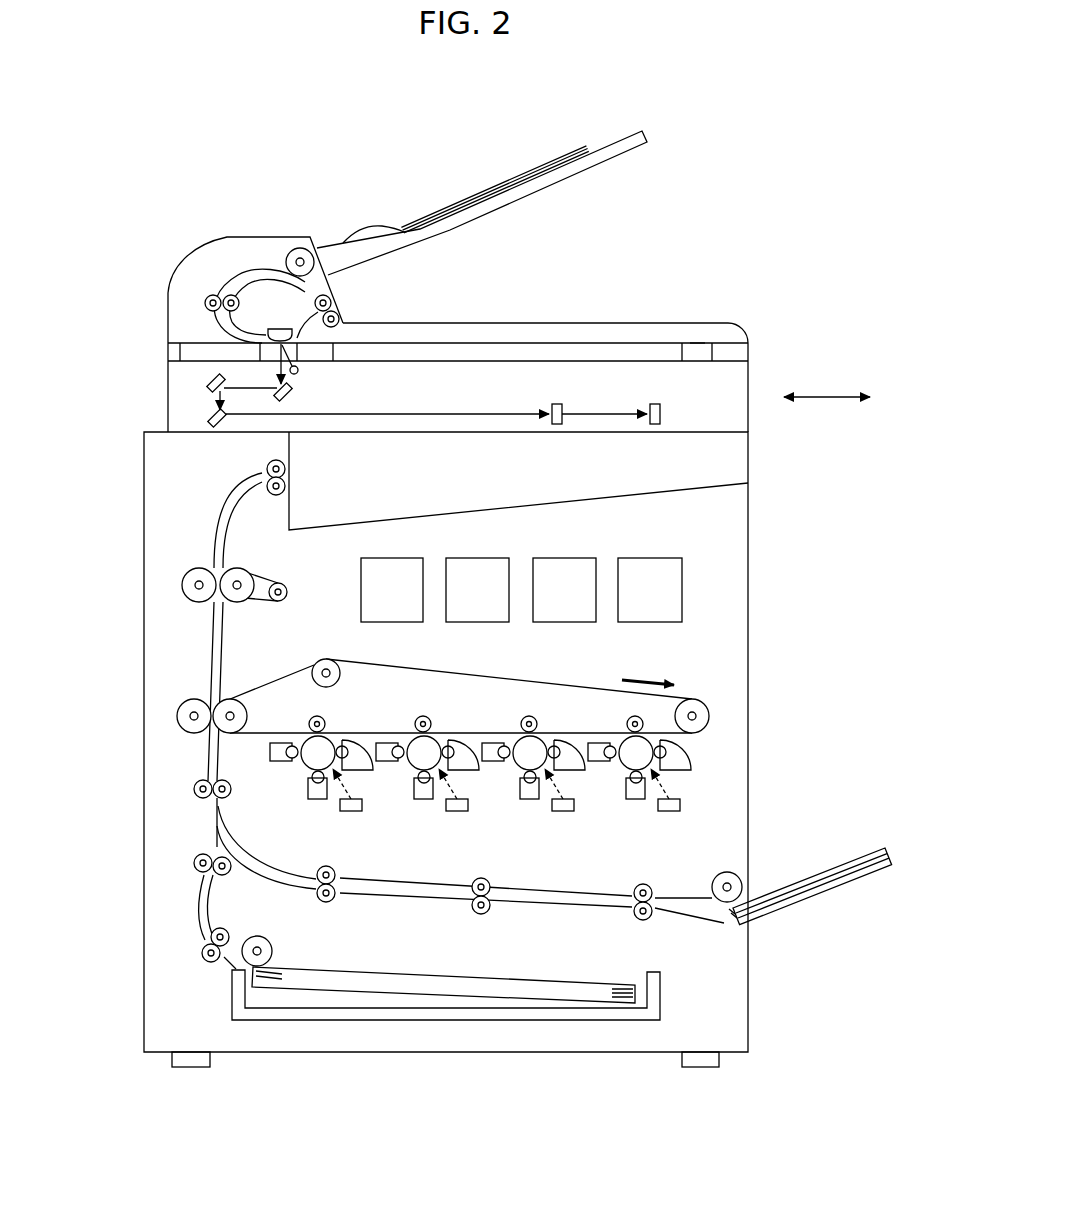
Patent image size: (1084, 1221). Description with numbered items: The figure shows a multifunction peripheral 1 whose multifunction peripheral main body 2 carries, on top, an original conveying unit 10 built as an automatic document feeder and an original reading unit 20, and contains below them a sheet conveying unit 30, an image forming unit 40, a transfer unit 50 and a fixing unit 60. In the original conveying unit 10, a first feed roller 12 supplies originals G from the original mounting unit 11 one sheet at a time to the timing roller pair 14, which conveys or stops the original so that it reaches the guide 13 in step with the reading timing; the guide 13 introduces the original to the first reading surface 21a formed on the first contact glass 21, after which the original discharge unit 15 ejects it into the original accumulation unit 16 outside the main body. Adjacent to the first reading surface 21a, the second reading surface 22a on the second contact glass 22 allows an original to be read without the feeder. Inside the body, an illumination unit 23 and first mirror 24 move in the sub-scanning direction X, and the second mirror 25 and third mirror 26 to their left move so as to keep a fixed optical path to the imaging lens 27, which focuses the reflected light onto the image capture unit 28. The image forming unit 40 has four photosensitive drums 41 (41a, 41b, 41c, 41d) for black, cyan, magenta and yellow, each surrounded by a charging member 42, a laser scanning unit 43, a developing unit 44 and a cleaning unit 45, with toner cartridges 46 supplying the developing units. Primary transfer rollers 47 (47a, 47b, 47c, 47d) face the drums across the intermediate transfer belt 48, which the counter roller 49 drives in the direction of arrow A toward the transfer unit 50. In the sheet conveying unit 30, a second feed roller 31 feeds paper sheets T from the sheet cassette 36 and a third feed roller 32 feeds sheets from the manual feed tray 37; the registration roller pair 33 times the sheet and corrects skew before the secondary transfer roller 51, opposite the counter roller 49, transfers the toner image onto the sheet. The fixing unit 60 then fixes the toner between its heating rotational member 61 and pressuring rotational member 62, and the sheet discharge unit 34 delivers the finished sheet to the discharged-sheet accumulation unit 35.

The multifunction peripheral 1 is at (730, 128).
The multifunction peripheral main body 2 is at (752, 519).
The original conveying unit 10 is at (322, 220).
The original mounting unit 11 is at (620, 138).
The first feed roller 12 is at (300, 247).
The guide 13 is at (281, 327).
The timing roller pair 14 is at (208, 296).
The original discharge unit 15 is at (348, 300).
The original accumulation unit 16 is at (410, 321).
The original reading unit 20 is at (718, 381).
The first contact glass 21 is at (268, 351).
The first reading surface 21a is at (263, 342).
The second contact glass 22 is at (532, 355).
The second reading surface 22a is at (617, 343).
The illumination unit 23 is at (299, 371).
The first mirror 24 is at (291, 397).
The second mirror 25 is at (208, 383).
The third mirror 26 is at (208, 418).
The imaging lens 27 is at (557, 404).
The image capture unit 28 is at (655, 404).
The sheet conveying unit 30 is at (716, 966).
The second feed roller 31 is at (273, 949).
The third feed roller 32 is at (740, 873).
The registration roller pair 33 is at (194, 790).
The sheet discharge unit 34 is at (287, 471).
The discharged-sheet accumulation unit 35 is at (350, 523).
The sheet cassette 36 is at (661, 1008).
The manual feed tray 37 is at (856, 880).
The image forming unit 40 is at (712, 672).
The photosensitive drum 41 is at (340, 850).
The photosensitive drum 41a is at (304, 767).
The photosensitive drum 41b is at (410, 767).
The photosensitive drum 41c is at (516, 767).
The photosensitive drum 41d is at (622, 768).
The charging member 42 is at (635, 800).
The laser scanning unit 43 is at (670, 812).
The developing unit 44 is at (683, 772).
The cleaning unit 45 is at (272, 762).
The toner cartridge 46 is at (414, 558).
The primary transfer roller 47 is at (633, 658).
The primary transfer roller 47a is at (326, 716).
The primary transfer roller 47b is at (430, 716).
The primary transfer roller 47c is at (535, 716).
The primary transfer roller 47d is at (636, 716).
The intermediate transfer belt 48 is at (318, 662).
The counter roller 49 is at (232, 700).
The transfer unit 50 is at (178, 688).
The secondary transfer roller 51 is at (178, 718).
The fixing unit 60 is at (178, 559).
The heating rotational member 61 is at (243, 575).
The pressuring rotational member 62 is at (182, 584).